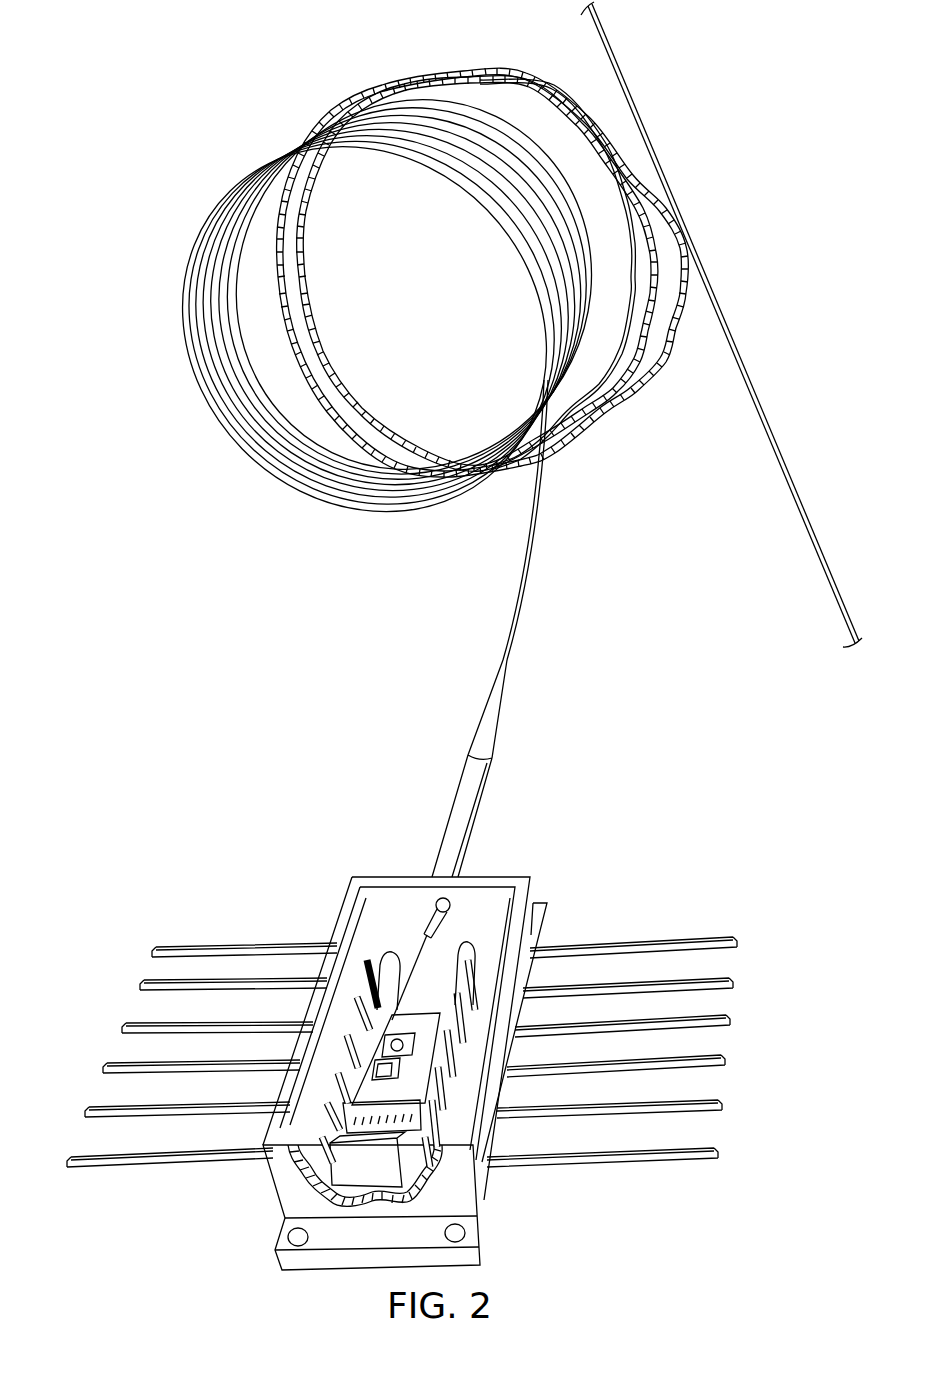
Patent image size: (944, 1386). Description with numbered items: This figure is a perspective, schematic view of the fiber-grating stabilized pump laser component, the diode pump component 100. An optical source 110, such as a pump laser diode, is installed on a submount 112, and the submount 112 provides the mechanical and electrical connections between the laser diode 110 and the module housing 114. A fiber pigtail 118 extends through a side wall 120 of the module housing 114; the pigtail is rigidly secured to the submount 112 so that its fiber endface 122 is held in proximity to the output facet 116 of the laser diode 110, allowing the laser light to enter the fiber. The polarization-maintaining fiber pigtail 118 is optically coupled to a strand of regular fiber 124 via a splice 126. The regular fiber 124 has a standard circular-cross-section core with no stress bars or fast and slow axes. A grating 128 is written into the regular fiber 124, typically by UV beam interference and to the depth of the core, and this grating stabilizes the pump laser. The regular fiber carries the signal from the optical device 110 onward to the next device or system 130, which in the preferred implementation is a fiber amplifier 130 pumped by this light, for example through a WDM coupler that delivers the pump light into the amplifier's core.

The diode pump component 100 is at (548, 62).
The optical source 110 is at (393, 1077).
The submount 112 is at (410, 1067).
The module housing 114 is at (327, 878).
The output facet 116 is at (383, 1063).
The fiber pigtail 118 is at (402, 513).
The side wall 120 is at (488, 895).
The fiber endface 122 is at (380, 1047).
The regular fiber 124 is at (656, 378).
The splice 126 is at (632, 392).
The grating 128 is at (629, 322).
The fiber amplifier 130 is at (748, 376).